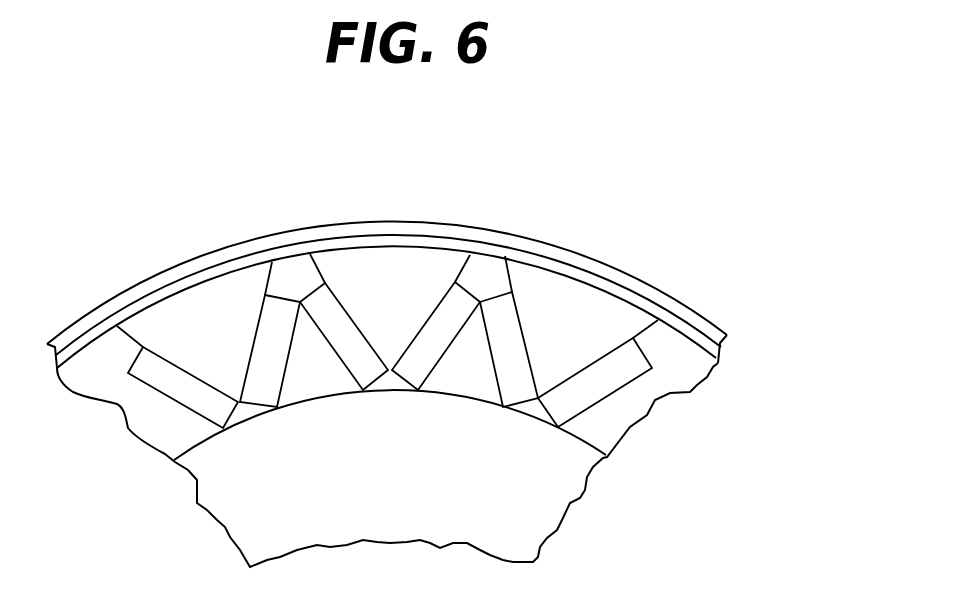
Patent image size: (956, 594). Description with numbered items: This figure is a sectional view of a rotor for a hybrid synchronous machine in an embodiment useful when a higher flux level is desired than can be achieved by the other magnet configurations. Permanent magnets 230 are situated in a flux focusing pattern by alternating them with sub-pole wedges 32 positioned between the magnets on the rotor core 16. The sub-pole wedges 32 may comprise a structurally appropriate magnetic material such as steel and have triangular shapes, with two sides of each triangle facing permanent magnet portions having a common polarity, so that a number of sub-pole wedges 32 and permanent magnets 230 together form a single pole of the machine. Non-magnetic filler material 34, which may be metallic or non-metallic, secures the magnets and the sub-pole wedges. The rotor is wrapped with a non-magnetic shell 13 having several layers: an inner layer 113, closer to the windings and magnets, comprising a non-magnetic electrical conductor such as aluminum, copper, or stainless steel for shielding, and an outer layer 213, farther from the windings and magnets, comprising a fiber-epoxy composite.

The non-magnetic shell 13 is at (441, 287).
The inner layer 113 is at (597, 276).
The outer layer 213 is at (647, 293).
The rotor core 16 is at (411, 487).
The sub-pole wedges 32 is at (390, 282).
The non-magnetic filler material 34 is at (484, 270).
The permanent magnets 230 is at (328, 311).